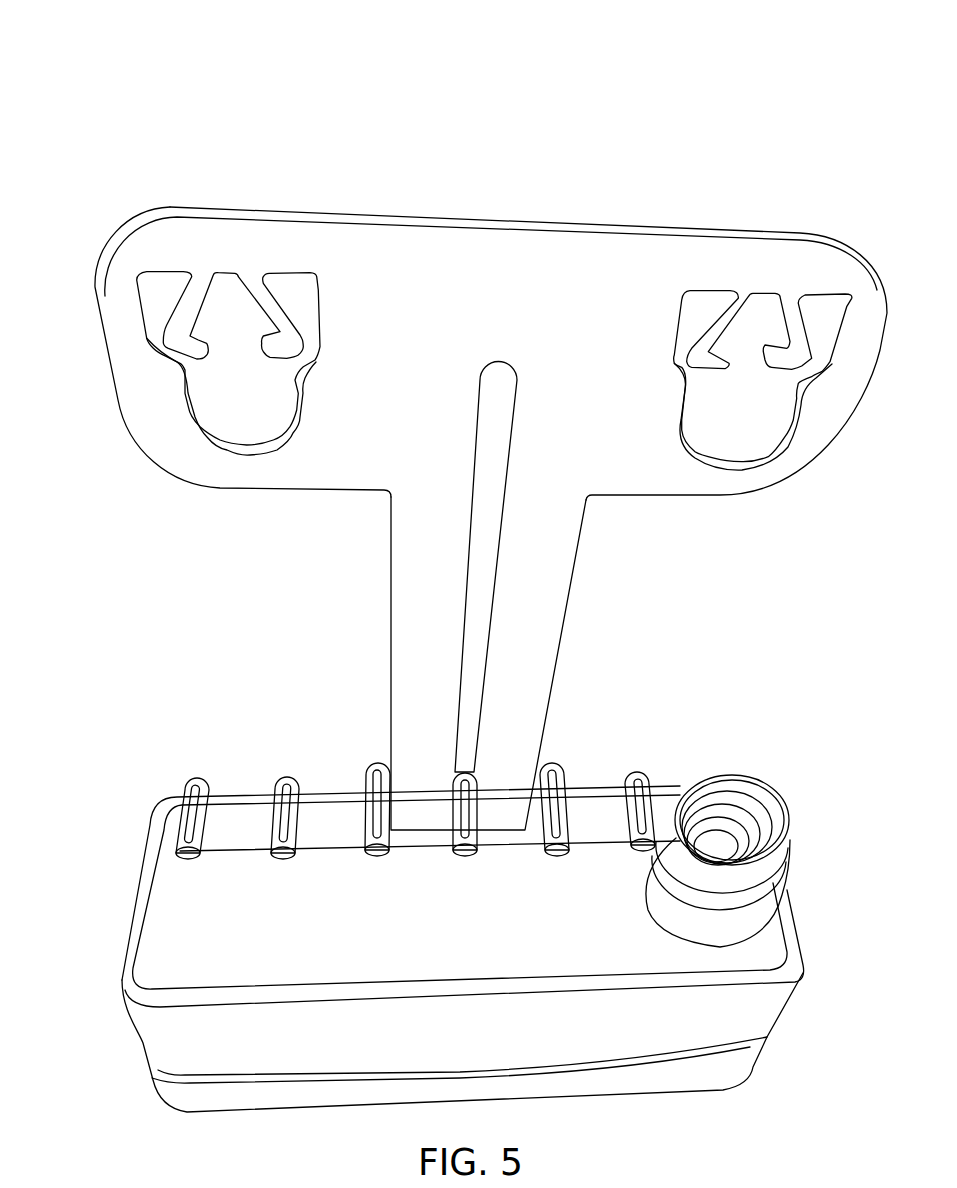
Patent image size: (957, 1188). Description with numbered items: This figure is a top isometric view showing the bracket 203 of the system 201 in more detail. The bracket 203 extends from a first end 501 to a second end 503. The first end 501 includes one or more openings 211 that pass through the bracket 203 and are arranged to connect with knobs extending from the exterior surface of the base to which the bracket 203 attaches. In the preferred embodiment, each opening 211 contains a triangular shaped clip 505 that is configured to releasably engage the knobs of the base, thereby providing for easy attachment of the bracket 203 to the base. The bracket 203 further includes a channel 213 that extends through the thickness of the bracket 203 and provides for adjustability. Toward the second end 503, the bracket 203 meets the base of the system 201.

The system 201 is at (755, 67).
The first end 501 is at (410, 198).
The bracket 203 is at (390, 632).
The channel 213 is at (473, 694).
The openings 211 is at (227, 395).
The triangular shaped clip 505 is at (190, 300).
The second end 503 is at (350, 778).